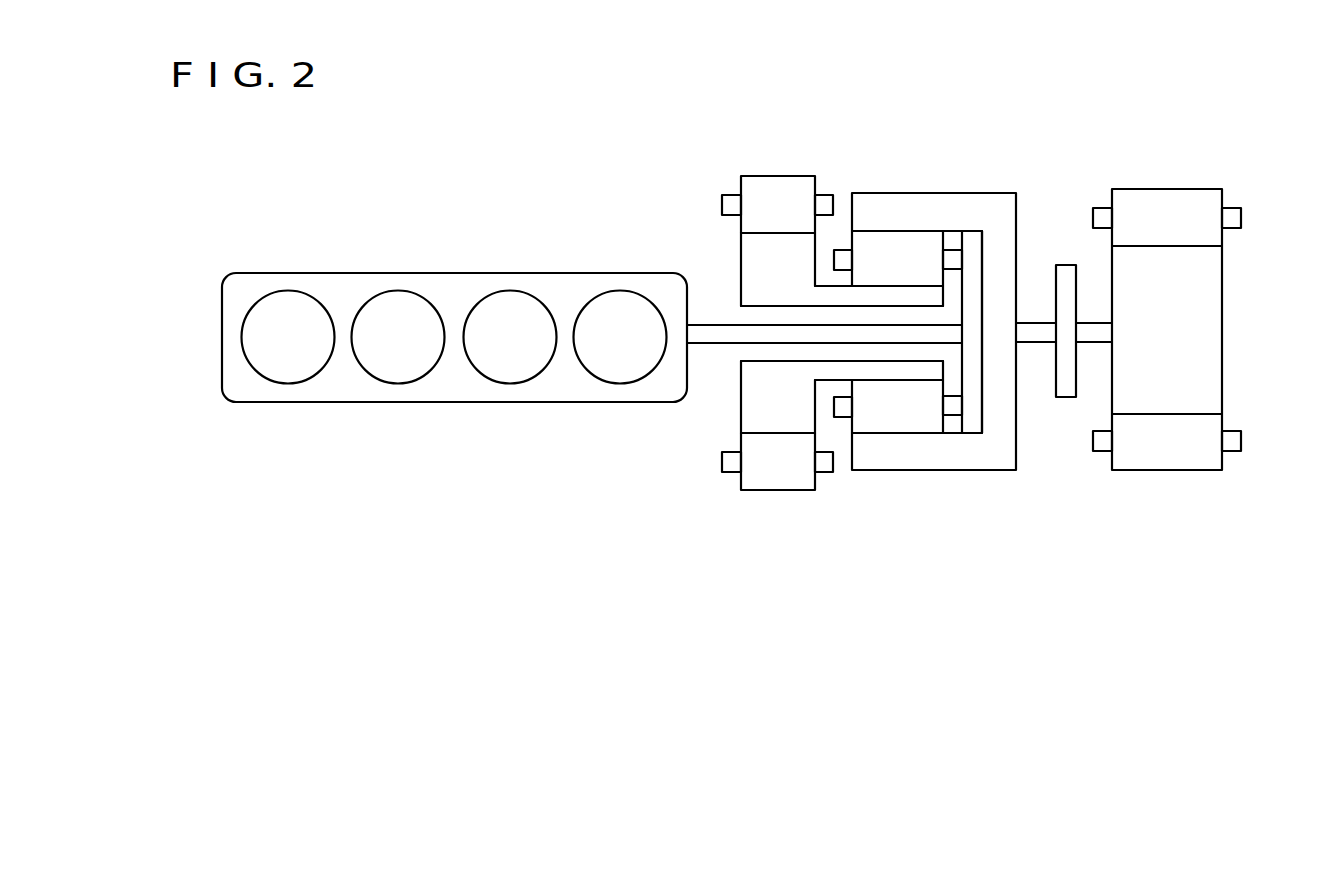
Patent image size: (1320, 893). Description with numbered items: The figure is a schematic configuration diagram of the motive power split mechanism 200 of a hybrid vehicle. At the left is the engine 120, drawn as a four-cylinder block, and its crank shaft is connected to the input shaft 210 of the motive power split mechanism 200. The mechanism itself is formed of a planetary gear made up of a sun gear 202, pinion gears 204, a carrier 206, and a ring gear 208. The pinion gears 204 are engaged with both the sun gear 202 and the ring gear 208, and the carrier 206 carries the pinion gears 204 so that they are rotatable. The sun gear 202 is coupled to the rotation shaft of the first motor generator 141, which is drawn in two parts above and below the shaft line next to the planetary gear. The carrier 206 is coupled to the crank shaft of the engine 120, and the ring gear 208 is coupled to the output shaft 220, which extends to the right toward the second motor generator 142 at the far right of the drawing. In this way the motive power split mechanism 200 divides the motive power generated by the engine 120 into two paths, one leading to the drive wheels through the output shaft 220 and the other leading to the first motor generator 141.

The engine 120 is at (456, 273).
The first motor generator 141 is at (781, 177).
The second motor generator 142 is at (1165, 188).
The motive power split mechanism 200 is at (929, 163).
The sun gear 202 is at (883, 379).
The pinion gears 204 is at (916, 433).
The carrier 206 is at (962, 361).
The ring gear 208 is at (983, 470).
The input shaft 210 is at (715, 345).
The output shaft 220 is at (1039, 342).